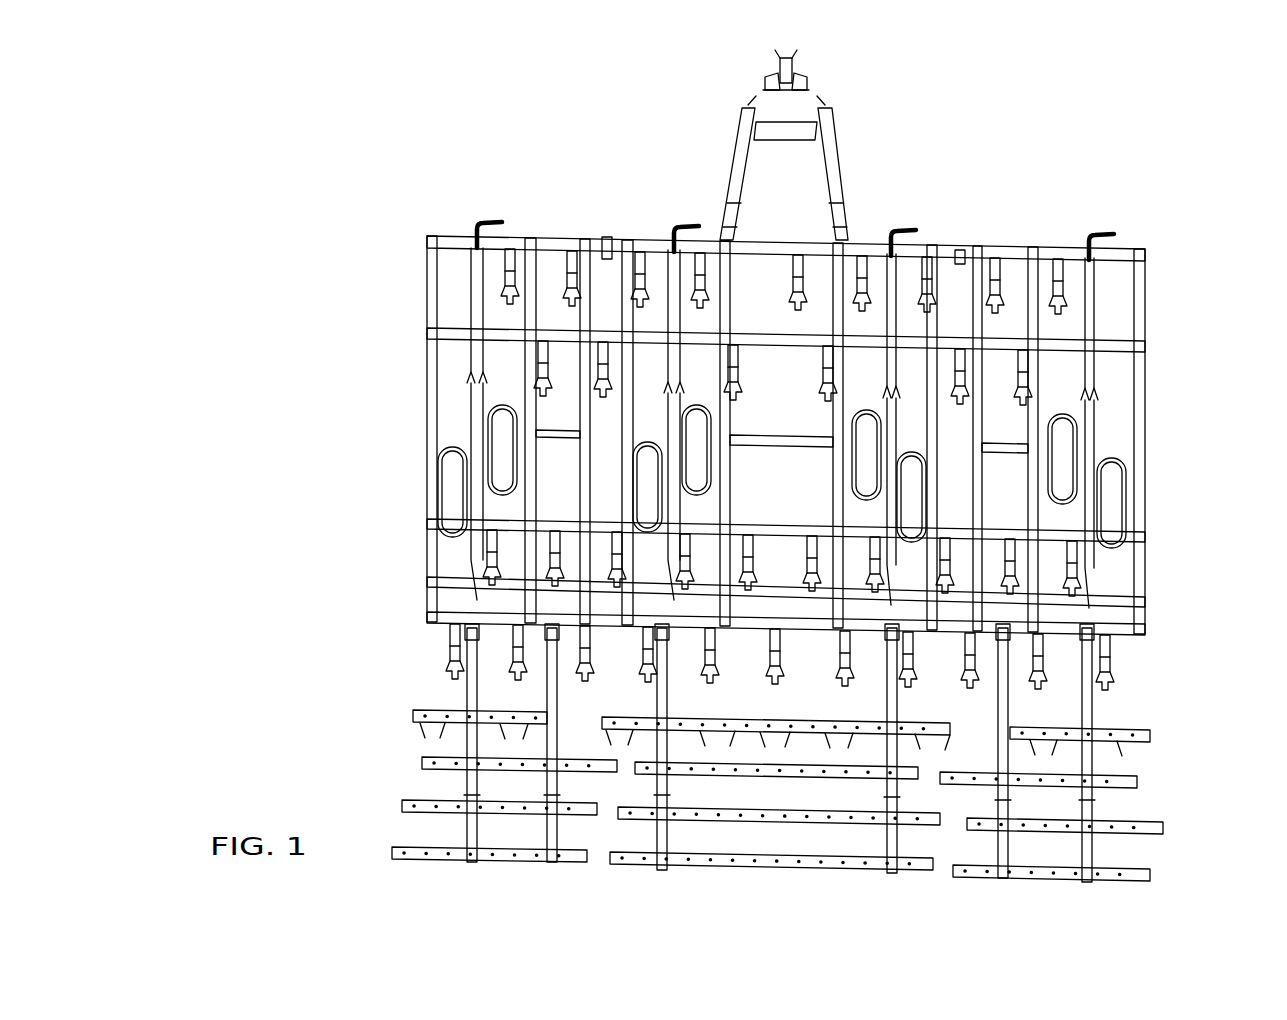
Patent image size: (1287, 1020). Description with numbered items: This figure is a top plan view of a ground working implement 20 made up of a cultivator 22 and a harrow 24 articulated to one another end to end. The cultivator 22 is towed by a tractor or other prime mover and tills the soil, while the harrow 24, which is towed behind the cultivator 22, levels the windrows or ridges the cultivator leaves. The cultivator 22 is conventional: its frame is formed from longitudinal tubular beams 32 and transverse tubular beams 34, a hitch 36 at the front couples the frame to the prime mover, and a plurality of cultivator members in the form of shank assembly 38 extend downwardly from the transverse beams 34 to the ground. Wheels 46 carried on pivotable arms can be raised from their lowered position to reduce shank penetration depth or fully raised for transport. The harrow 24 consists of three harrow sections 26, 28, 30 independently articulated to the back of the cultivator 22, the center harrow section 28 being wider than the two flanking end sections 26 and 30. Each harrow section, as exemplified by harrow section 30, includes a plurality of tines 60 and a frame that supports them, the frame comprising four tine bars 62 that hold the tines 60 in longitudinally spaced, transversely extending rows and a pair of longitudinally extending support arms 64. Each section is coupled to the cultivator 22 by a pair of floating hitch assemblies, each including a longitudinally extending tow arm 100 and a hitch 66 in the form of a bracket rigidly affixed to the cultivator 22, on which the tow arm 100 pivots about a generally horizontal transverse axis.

The ground working implement 20 is at (1190, 412).
The cultivator 22 is at (1150, 312).
The harrow 24 is at (1152, 718).
The harrow section 26 is at (500, 876).
The center harrow section 28 is at (765, 878).
The harrow section 30 is at (1045, 892).
The longitudinal tubular beams 32 is at (427, 373).
The transverse tubular beams 34 is at (1020, 262).
The hitch 36 is at (790, 67).
The shank assembly 38 is at (515, 272).
The wheels 46 is at (500, 432).
The tines 60 is at (745, 740).
The tine bars 62 is at (422, 762).
The support arms 64 is at (552, 832).
The hitch 66 is at (455, 630).
The tow arm 100 is at (553, 745).